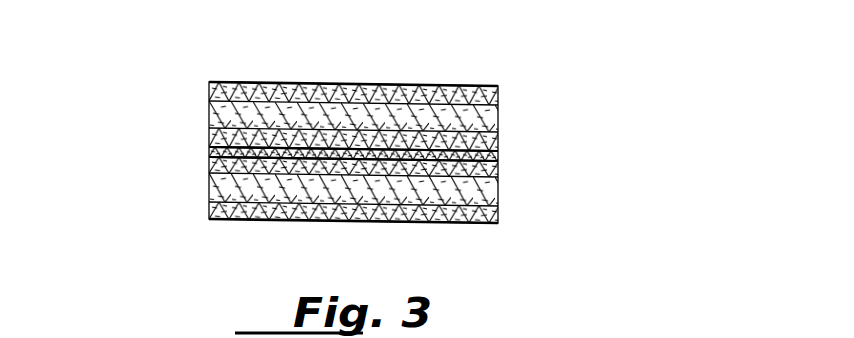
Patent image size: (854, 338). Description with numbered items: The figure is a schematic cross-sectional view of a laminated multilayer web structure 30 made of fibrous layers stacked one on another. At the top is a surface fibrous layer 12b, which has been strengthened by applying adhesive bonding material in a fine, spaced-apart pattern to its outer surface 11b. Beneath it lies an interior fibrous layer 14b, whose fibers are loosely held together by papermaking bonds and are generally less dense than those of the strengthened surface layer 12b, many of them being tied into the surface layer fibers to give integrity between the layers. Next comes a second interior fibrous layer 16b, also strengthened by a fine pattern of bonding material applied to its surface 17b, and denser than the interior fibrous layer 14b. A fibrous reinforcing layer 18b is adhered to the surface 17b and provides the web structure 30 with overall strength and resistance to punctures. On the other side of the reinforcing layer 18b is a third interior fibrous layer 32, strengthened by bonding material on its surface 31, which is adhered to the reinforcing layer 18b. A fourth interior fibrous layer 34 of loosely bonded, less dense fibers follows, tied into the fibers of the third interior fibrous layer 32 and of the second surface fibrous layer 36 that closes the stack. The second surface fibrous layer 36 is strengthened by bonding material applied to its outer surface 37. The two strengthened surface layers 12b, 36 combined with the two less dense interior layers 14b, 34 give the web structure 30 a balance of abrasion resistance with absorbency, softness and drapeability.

The web structure 30 is at (170, 156).
The surface of surface fibrous layer 11b is at (358, 83).
The surface fibrous layer 12b is at (500, 95).
The interior fibrous layer 14b is at (493, 118).
The second interior fibrous layer 16b is at (497, 145).
The fibrous reinforcing layer 18b is at (500, 157).
The surface of second interior fibrous layer 17b is at (208, 148).
The surface of third interior fibrous layer 31 is at (208, 157).
The third interior fibrous layer 32 is at (500, 172).
The fourth interior fibrous layer 34 is at (500, 190).
The second surface fibrous layer 36 is at (497, 222).
The surface of second surface fibrous layer 37 is at (232, 220).